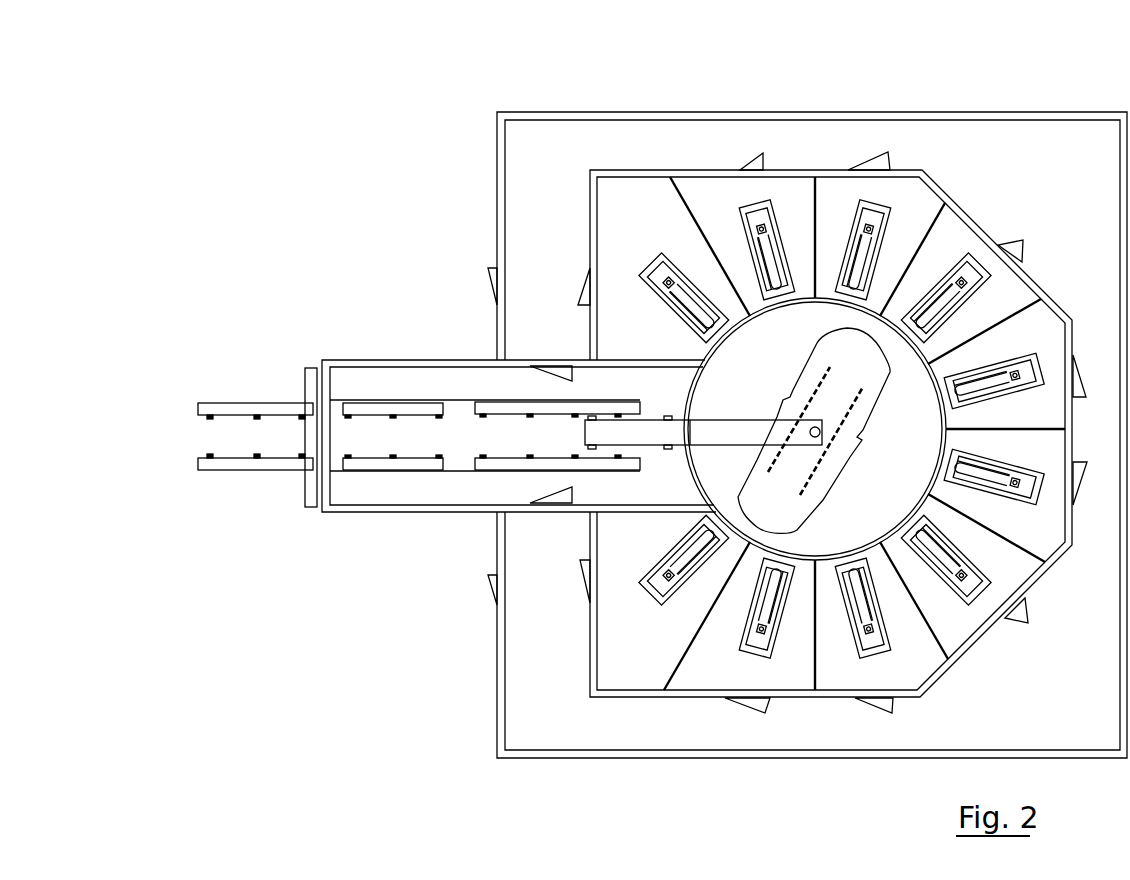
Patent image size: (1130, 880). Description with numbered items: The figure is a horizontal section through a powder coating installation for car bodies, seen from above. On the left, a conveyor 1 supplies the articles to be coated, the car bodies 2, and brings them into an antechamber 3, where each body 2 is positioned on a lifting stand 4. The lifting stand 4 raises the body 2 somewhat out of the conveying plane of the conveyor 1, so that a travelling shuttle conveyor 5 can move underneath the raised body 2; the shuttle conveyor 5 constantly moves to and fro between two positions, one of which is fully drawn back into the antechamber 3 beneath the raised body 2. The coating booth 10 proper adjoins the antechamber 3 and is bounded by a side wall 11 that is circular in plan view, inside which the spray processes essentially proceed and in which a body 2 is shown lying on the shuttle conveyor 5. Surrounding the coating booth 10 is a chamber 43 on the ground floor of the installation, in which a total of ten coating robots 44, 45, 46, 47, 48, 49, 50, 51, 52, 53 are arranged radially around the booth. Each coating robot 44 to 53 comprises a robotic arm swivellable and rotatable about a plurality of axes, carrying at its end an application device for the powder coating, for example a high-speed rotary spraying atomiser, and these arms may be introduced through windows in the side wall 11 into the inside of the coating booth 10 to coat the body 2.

The conveyor 1 is at (238, 407).
The car body 2 is at (829, 461).
The antechamber 3 is at (367, 400).
The lifting stand 4 is at (498, 428).
The shuttle conveyor 5 is at (661, 437).
The coating booth 10 is at (907, 389).
The side wall 11 is at (727, 337).
The chamber 43 is at (706, 201).
The coating robot 44 is at (656, 282).
The coating robot 45 is at (763, 228).
The coating robot 46 is at (857, 238).
The coating robot 47 is at (960, 268).
The coating robot 48 is at (1020, 366).
The coating robot 49 is at (1027, 477).
The coating robot 50 is at (966, 582).
The coating robot 51 is at (872, 650).
The coating robot 52 is at (757, 648).
The coating robot 53 is at (668, 592).